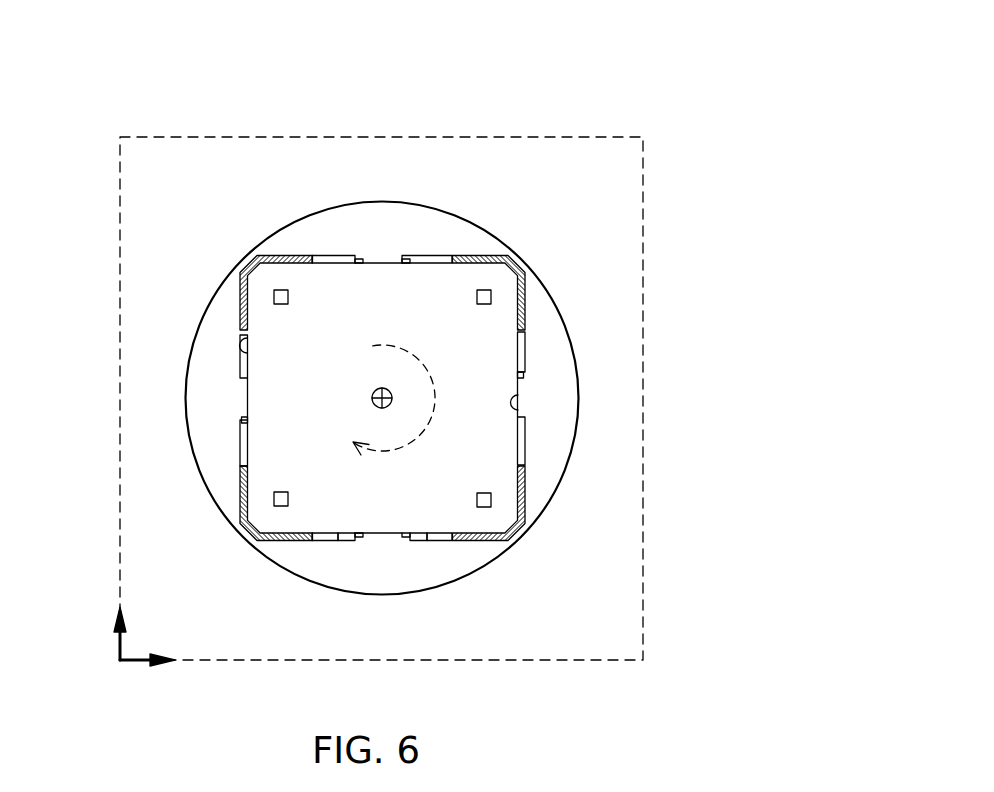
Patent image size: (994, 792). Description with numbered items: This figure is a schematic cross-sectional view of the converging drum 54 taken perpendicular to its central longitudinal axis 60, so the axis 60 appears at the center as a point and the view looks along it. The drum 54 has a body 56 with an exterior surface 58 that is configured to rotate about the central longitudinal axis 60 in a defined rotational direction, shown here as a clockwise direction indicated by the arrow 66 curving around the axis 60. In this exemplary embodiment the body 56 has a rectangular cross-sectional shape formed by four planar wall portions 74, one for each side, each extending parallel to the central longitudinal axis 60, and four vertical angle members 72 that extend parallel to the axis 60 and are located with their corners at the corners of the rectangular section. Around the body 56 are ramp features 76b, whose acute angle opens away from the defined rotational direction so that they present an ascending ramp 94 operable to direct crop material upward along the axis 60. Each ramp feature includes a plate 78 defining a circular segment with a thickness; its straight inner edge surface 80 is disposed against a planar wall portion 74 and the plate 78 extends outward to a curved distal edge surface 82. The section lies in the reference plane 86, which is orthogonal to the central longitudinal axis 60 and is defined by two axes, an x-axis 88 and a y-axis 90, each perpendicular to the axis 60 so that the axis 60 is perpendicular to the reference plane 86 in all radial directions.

The converging drum 54 is at (517, 82).
The body 56 is at (486, 252).
The exterior surface 58 is at (523, 303).
The central longitudinal axis 60 is at (371, 398).
The arrow 66 is at (406, 347).
The vertical angle members 72 is at (287, 256).
The planar wall portion 74 is at (338, 256).
The ramp feature 76b is at (382, 233).
The plate 78 is at (223, 313).
The inner edge surface 80 is at (240, 358).
The curved distal edge surface 82 is at (185, 398).
The reference plane 86 is at (538, 665).
The x-axis 88 is at (132, 662).
The y-axis 90 is at (118, 643).
The ascending ramp 94 is at (413, 235).